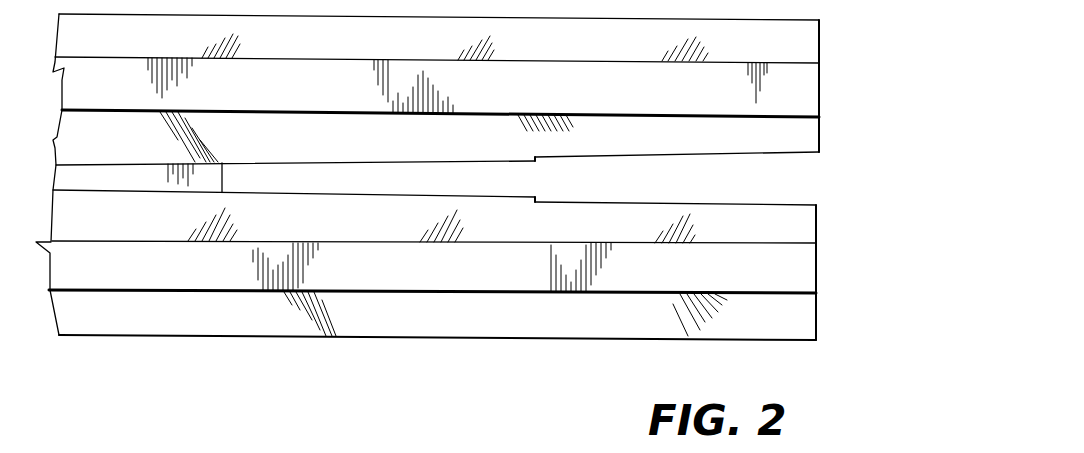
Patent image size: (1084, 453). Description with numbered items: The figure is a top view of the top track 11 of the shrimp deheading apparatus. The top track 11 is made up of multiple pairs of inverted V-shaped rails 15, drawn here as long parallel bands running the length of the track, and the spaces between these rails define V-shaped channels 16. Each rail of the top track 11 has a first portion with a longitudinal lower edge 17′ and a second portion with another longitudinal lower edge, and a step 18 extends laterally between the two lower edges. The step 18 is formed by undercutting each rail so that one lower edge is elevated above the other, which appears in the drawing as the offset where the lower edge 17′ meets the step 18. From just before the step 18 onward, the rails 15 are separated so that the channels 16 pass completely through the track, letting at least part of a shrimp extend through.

The top track 11 is at (443, 210).
The inverted V-shaped rails 15 is at (62, 93).
The V-shaped channels 16 is at (808, 183).
The longitudinal lower edge 17′ is at (527, 162).
The step 18 is at (535, 160).